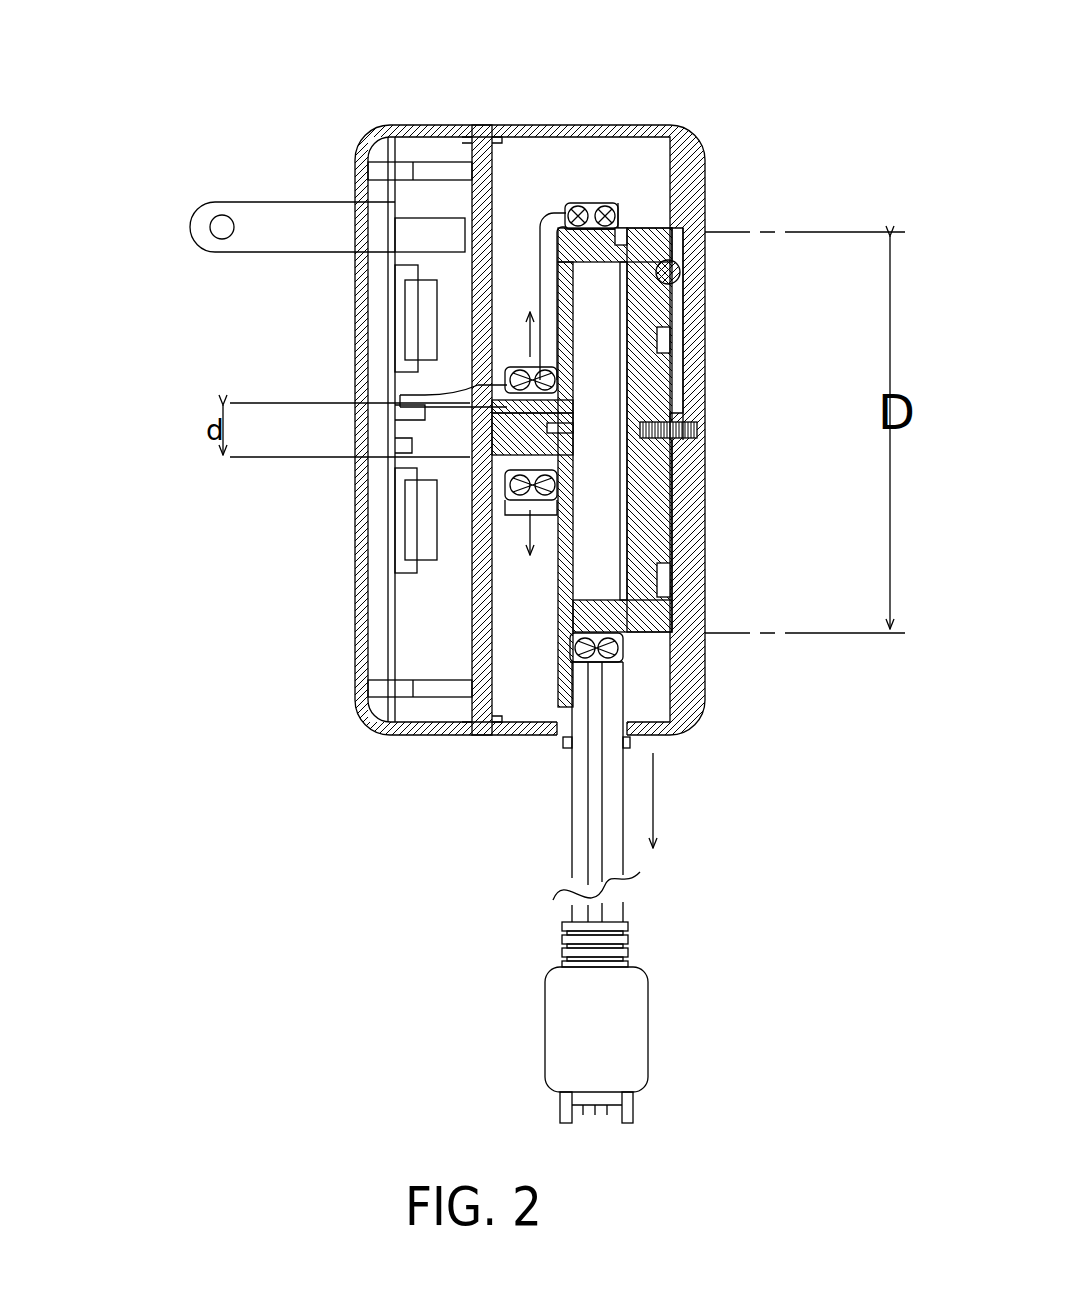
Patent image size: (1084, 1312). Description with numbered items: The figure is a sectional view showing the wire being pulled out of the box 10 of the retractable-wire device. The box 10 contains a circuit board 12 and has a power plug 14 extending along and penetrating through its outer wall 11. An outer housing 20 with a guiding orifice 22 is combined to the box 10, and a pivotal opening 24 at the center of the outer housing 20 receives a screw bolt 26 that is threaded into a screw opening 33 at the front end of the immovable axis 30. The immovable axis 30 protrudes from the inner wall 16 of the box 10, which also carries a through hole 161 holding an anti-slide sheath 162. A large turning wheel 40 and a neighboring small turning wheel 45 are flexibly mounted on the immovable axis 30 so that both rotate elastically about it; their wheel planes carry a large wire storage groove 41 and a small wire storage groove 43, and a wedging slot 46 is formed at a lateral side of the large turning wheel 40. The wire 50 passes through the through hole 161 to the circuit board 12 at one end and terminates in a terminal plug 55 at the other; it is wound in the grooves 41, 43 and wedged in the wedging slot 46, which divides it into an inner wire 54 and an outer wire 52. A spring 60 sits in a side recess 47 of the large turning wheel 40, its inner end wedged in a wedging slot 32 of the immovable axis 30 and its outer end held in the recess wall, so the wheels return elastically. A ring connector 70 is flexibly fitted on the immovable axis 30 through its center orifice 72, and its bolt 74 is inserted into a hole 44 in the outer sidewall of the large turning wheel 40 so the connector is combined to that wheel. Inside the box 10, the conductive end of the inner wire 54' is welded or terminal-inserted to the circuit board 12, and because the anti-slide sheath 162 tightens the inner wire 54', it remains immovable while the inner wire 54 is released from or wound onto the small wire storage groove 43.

The box 10 is at (371, 127).
The outer wall 11 is at (356, 352).
The circuit board 12 is at (366, 640).
The power plug 14 is at (262, 220).
The inner wall 16 is at (575, 700).
The through hole 161 is at (465, 372).
The anti-slide sheath 162 is at (437, 401).
The outer housing 20 is at (703, 206).
The guiding orifice 22 is at (568, 742).
The pivotal opening 24 is at (645, 425).
The screw bolt 26 is at (690, 432).
The immovable axis 30 is at (500, 433).
The wedging slot 32 is at (690, 504).
The screw opening 33 is at (680, 445).
The large turning wheel 40 is at (580, 204).
The large wire storage groove 41 is at (602, 204).
The small wire storage groove 43 is at (507, 466).
The hole 44 is at (615, 237).
The small turning wheel 45 is at (505, 479).
The wedging slot 46 is at (560, 202).
The side recess 47 is at (627, 622).
The wire 50 is at (641, 892).
The outer wire 52 is at (620, 210).
The inner wire 54 is at (357, 544).
The inner wire 54' is at (347, 346).
The terminal plug 55 is at (610, 1025).
The spring 60 is at (690, 603).
The ring connector 70 is at (637, 322).
The center orifice 72 is at (660, 395).
The bolt 74 is at (650, 216).